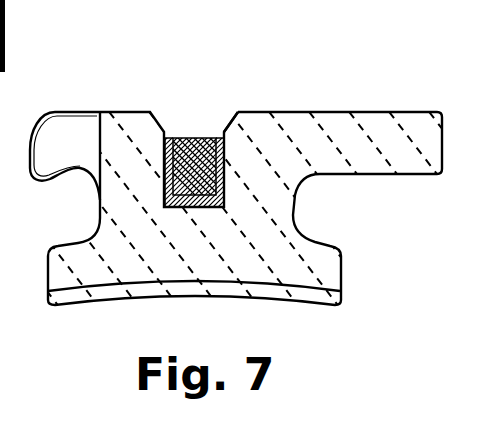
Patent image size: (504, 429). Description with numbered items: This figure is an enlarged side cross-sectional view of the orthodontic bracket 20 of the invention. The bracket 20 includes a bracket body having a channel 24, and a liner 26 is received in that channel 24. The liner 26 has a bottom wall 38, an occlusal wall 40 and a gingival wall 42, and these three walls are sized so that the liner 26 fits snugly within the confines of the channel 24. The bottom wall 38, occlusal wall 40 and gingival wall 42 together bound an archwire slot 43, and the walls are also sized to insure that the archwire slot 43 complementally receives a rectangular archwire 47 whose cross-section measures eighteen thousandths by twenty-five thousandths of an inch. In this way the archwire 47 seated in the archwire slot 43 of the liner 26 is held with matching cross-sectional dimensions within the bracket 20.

The bracket 20 is at (252, 191).
The channel 24 is at (167, 131).
The liner 26 is at (211, 113).
The bottom wall 38 is at (203, 207).
The occlusal wall 40 is at (165, 171).
The gingival wall 42 is at (225, 170).
The archwire slot 43 is at (212, 137).
The rectangular archwire 47 is at (177, 137).